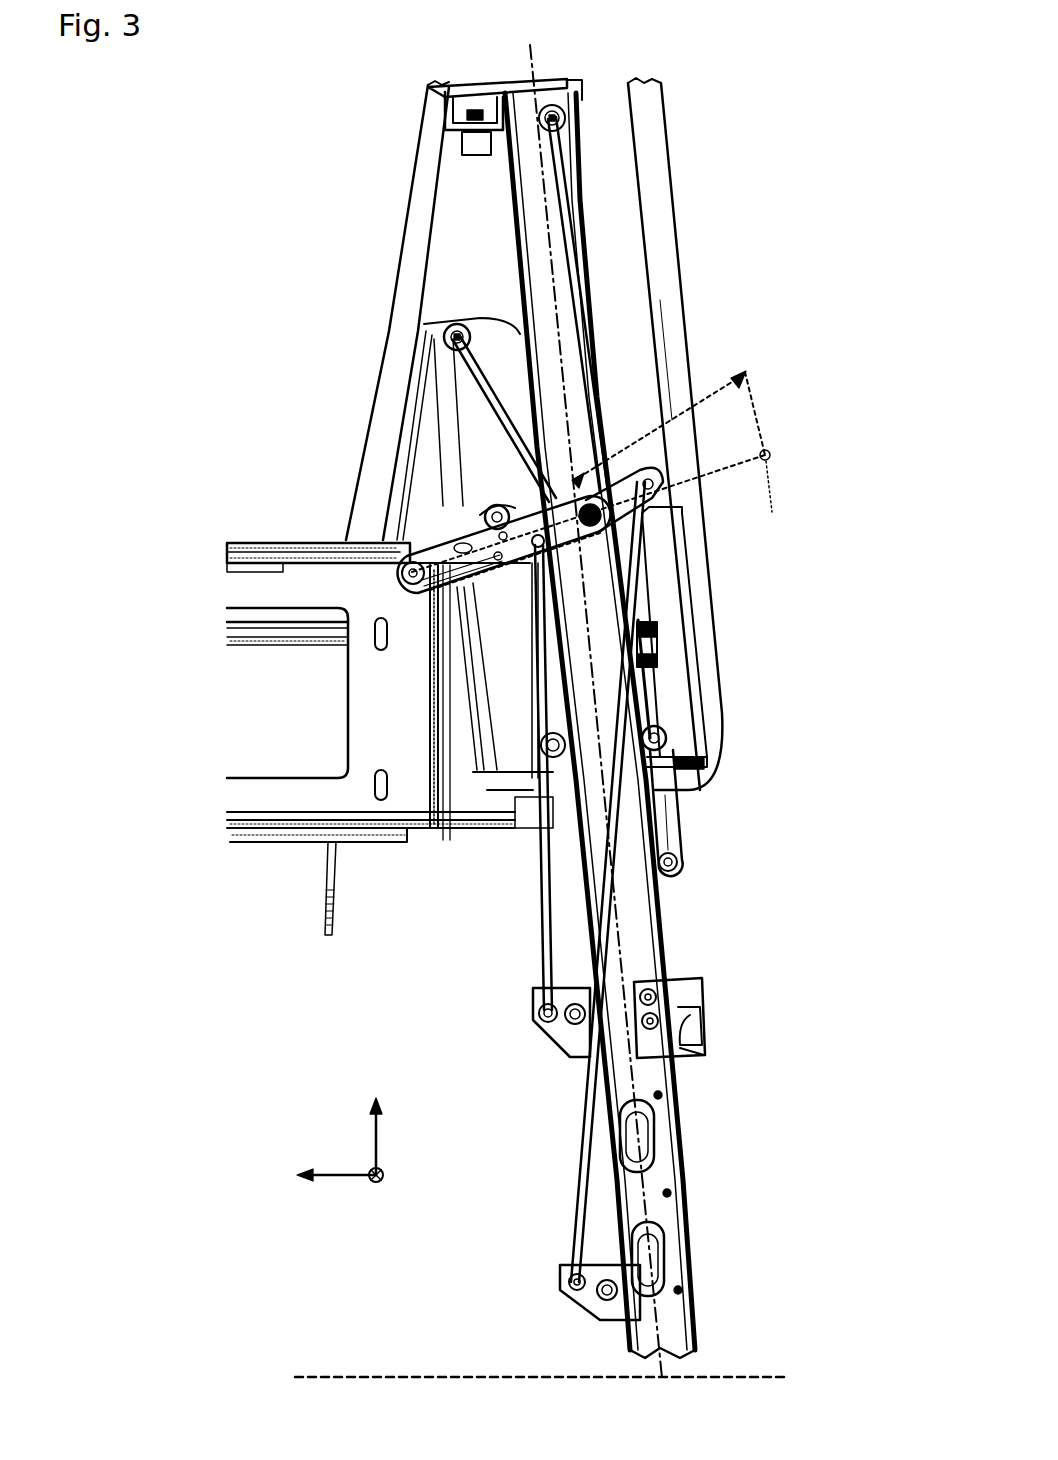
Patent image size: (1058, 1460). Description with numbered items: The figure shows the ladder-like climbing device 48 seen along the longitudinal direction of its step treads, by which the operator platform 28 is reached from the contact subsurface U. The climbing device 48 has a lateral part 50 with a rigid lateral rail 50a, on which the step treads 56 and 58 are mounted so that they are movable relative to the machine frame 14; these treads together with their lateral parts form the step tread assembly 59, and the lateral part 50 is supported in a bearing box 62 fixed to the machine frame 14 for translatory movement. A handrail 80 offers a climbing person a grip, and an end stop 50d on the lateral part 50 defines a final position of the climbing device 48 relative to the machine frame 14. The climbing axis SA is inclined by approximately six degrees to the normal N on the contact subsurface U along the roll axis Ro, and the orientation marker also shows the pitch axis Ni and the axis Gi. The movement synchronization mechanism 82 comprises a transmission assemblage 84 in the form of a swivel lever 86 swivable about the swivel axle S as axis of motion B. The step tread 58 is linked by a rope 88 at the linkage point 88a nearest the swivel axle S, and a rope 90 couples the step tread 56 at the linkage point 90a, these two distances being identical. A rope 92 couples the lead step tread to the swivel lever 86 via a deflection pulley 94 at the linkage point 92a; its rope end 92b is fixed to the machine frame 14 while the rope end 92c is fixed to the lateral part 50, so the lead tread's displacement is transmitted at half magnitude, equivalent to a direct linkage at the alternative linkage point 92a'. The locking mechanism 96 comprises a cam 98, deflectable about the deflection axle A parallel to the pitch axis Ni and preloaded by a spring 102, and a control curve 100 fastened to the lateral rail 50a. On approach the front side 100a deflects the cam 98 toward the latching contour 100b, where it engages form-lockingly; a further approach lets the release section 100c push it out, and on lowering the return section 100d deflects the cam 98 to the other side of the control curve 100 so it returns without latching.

The climbing device 48 is at (500, 82).
The climbing axis SA is at (533, 88).
The lateral part 50 is at (586, 117).
The lateral rail 50a is at (636, 950).
The end stop 50d is at (476, 153).
The rope end 92c is at (568, 128).
The movement synchronization mechanism 82 is at (370, 232).
The transmission assemblage 84 is at (392, 313).
The handrail 80 is at (662, 276).
The step tread assembly 59 is at (628, 326).
The bearing box 62 is at (680, 672).
The spring 102 is at (650, 650).
The rope end 92b is at (457, 327).
The rope 92 is at (483, 395).
The linkage point 92a is at (605, 548).
The alternative linkage point 92a' is at (613, 480).
The linkage point 90a is at (646, 480).
The swivel lever 86 is at (454, 535).
The axis of motion B is at (400, 575).
The swivel axle S is at (378, 580).
The linkage point 88a is at (541, 547).
The deflection pulley 94 is at (570, 482).
The rope 88 is at (533, 640).
The rope 90 is at (621, 688).
The step tread 58 is at (565, 1004).
The step tread 56 is at (594, 1266).
The deflection axle A is at (662, 735).
The cam 98 is at (680, 860).
The locking mechanism 96 is at (802, 857).
The control curve 100 is at (766, 1020).
The front side 100a is at (690, 992).
The latching contour 100b is at (700, 1026).
The release section 100c is at (706, 1032).
The return section 100d is at (690, 1053).
The machine frame 14 is at (190, 558).
The operator platform 28 is at (235, 438).
The direction of gravity (inverse) Gi is at (378, 1128).
The roll axis Ro is at (340, 1176).
The pitch axis Ni is at (384, 1175).
The normal N is at (662, 1175).
The contact subsurface U is at (403, 1376).